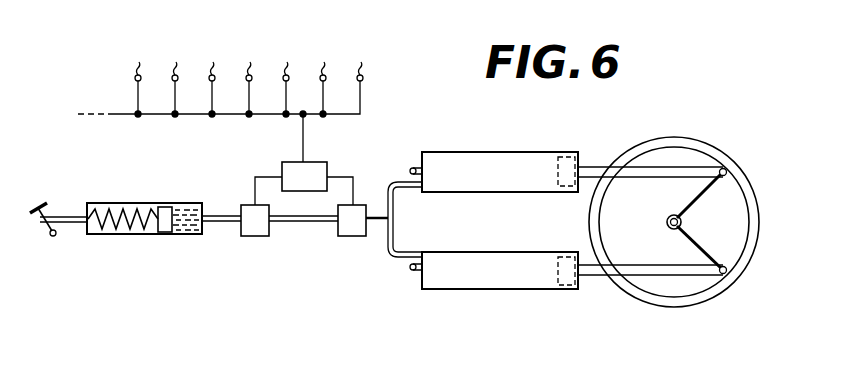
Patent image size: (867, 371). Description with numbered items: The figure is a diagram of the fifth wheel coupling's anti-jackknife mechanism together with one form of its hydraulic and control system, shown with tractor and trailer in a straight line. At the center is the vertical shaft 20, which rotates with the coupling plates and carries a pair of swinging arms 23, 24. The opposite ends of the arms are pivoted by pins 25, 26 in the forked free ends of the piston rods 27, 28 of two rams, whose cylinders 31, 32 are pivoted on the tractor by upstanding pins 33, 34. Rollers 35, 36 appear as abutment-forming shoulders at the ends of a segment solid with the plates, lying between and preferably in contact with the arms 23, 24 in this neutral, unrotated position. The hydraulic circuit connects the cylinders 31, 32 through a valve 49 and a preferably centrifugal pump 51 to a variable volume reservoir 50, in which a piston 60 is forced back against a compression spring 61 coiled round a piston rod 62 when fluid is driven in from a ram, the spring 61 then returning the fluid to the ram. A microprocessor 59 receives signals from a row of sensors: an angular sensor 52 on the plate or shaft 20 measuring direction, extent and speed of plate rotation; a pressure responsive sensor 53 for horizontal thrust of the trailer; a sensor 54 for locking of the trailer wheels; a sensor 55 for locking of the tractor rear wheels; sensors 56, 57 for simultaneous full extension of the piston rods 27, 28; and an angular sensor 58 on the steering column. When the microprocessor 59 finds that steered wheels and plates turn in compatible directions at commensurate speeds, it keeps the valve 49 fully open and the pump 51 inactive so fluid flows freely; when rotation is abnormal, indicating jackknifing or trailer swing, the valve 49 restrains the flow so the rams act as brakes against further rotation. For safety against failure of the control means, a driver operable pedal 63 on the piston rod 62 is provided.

The vertical shaft 20 is at (666, 222).
The swinging arm 23 is at (688, 206).
The swinging arm 24 is at (683, 240).
The pin 25 is at (726, 166).
The pin 26 is at (721, 283).
The piston rod 27 is at (592, 162).
The piston rod 28 is at (592, 278).
The cylinder 31 is at (483, 156).
The cylinder 32 is at (497, 284).
The upstanding pin 33 is at (412, 168).
The upstanding pin 34 is at (413, 270).
The roller 35 is at (750, 187).
The roller 36 is at (735, 263).
The valve 49 is at (352, 237).
The variable volume reservoir 50 is at (135, 239).
The pump 51 is at (255, 237).
The angular sensor 52 is at (359, 60).
The pressure responsive sensor 53 is at (322, 78).
The sensor 54 is at (285, 78).
The sensor 55 is at (248, 78).
The sensor 56 is at (211, 78).
The sensor 57 is at (175, 78).
The angular sensor 58 is at (137, 78).
The microprocessor 59 is at (290, 161).
The piston 60 is at (163, 207).
The compression spring 61 is at (100, 207).
The piston rod 62 is at (68, 224).
The pedal 63 is at (47, 201).